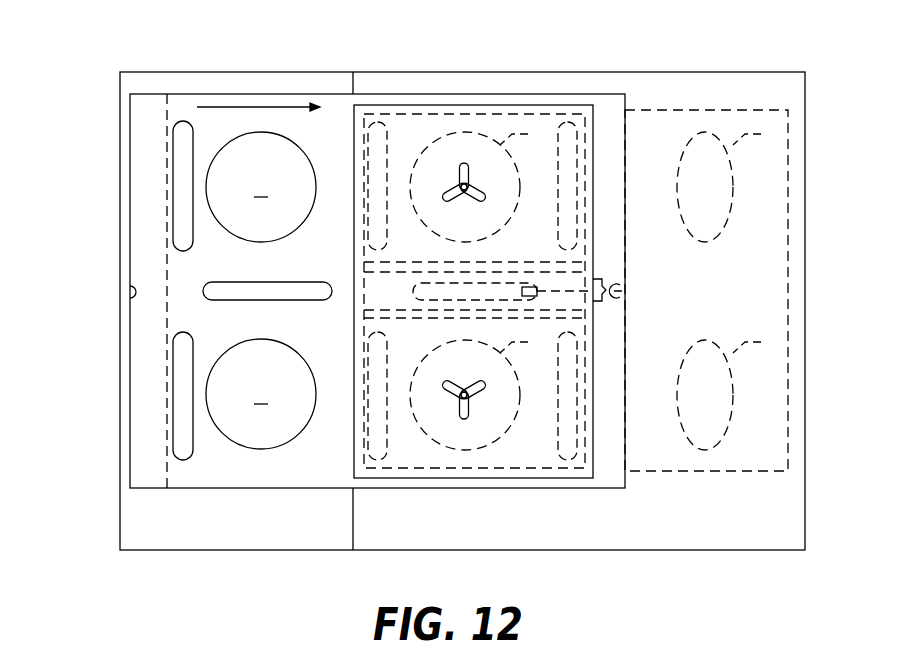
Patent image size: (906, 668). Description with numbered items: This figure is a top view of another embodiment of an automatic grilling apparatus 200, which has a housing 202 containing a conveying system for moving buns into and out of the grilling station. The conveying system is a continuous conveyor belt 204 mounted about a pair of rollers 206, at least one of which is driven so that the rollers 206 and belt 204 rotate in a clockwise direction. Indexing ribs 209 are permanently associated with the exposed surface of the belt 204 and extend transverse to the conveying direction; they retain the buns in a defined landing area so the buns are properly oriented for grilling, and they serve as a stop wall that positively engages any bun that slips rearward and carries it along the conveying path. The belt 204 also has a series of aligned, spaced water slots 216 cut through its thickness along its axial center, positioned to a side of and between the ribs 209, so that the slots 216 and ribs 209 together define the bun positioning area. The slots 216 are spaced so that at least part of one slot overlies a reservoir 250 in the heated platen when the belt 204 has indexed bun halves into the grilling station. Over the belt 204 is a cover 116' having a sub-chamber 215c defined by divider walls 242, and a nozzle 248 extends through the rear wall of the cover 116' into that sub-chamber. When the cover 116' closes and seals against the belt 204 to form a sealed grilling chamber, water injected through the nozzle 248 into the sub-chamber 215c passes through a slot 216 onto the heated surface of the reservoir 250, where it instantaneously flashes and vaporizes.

The automatic grilling apparatus 200 is at (203, 58).
The housing 202 is at (757, 66).
The conveyor belt 204 is at (301, 473).
The rollers 206 is at (140, 241).
The indexing ribs 209 is at (182, 190).
The water slots 216 is at (131, 292).
The sub-chamber 215c is at (380, 288).
The cover 116' is at (530, 258).
The reservoir 250 is at (507, 293).
The divider walls 242 is at (590, 262).
The nozzle 248 is at (600, 313).